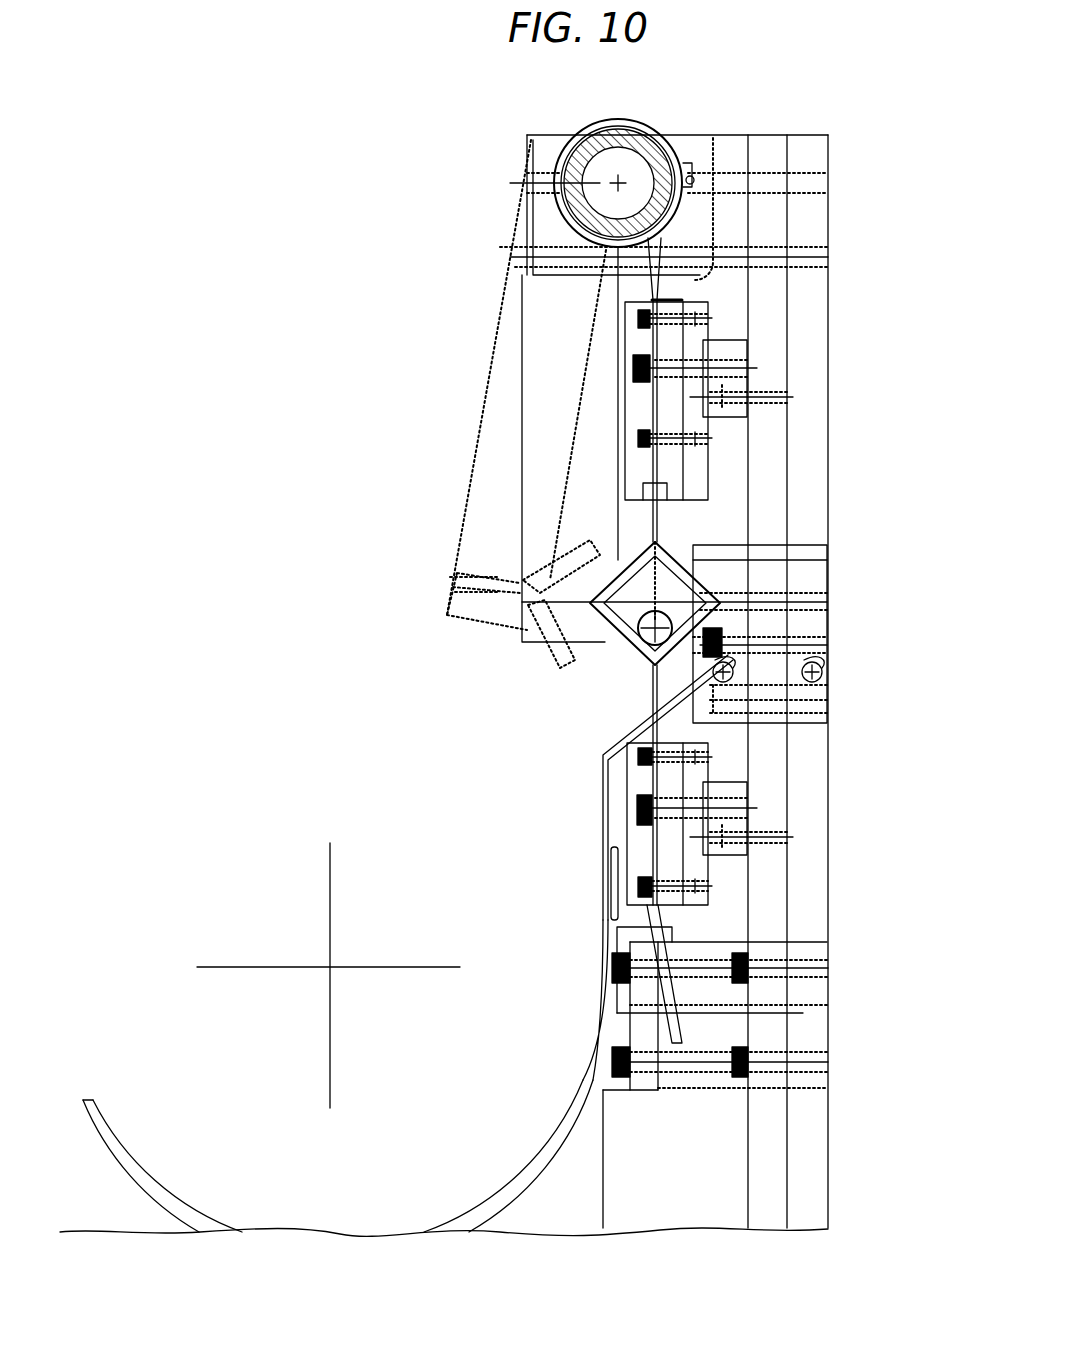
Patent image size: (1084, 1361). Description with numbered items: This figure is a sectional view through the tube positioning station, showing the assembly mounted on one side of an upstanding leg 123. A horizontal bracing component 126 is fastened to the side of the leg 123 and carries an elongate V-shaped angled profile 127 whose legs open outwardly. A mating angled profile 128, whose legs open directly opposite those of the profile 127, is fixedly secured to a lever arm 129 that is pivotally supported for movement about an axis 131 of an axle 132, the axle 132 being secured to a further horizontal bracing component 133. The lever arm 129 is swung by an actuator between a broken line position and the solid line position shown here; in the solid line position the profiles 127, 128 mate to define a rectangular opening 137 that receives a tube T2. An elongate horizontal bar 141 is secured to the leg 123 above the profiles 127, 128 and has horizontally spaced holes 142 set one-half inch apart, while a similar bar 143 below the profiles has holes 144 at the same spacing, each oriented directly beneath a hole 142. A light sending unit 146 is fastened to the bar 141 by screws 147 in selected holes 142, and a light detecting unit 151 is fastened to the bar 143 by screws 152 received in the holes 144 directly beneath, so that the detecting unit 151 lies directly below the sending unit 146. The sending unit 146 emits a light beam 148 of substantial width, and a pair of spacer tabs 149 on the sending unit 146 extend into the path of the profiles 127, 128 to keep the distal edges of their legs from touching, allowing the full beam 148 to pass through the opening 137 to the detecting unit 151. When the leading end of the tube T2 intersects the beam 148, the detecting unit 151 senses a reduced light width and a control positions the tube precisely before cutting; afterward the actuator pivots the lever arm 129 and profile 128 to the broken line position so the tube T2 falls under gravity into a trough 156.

The upstanding leg 123 is at (777, 345).
The horizontal bracing component 126 is at (805, 582).
The elongate angled profile 127 is at (658, 565).
The mating elongate angled profile 128 is at (613, 547).
The lever arm 129 is at (538, 398).
The axis 131 is at (622, 178).
The axle 132 is at (618, 133).
The horizontal bracing component 133 is at (797, 152).
The rectangular opening 137 is at (627, 613).
The elongate horizontal bar 141 is at (728, 347).
The holes 142 is at (735, 357).
The elongate horizontally extending bar 143 is at (735, 790).
The holes 144 is at (735, 802).
The light sending unit 146 is at (616, 391).
The screws 147 is at (633, 366).
The light beam 148 is at (750, 560).
The spacer tabs 149 is at (660, 548).
The light detecting unit 151 is at (620, 828).
The screws 152 is at (635, 808).
The trough 156 is at (476, 1205).
The tube T2 is at (617, 687).